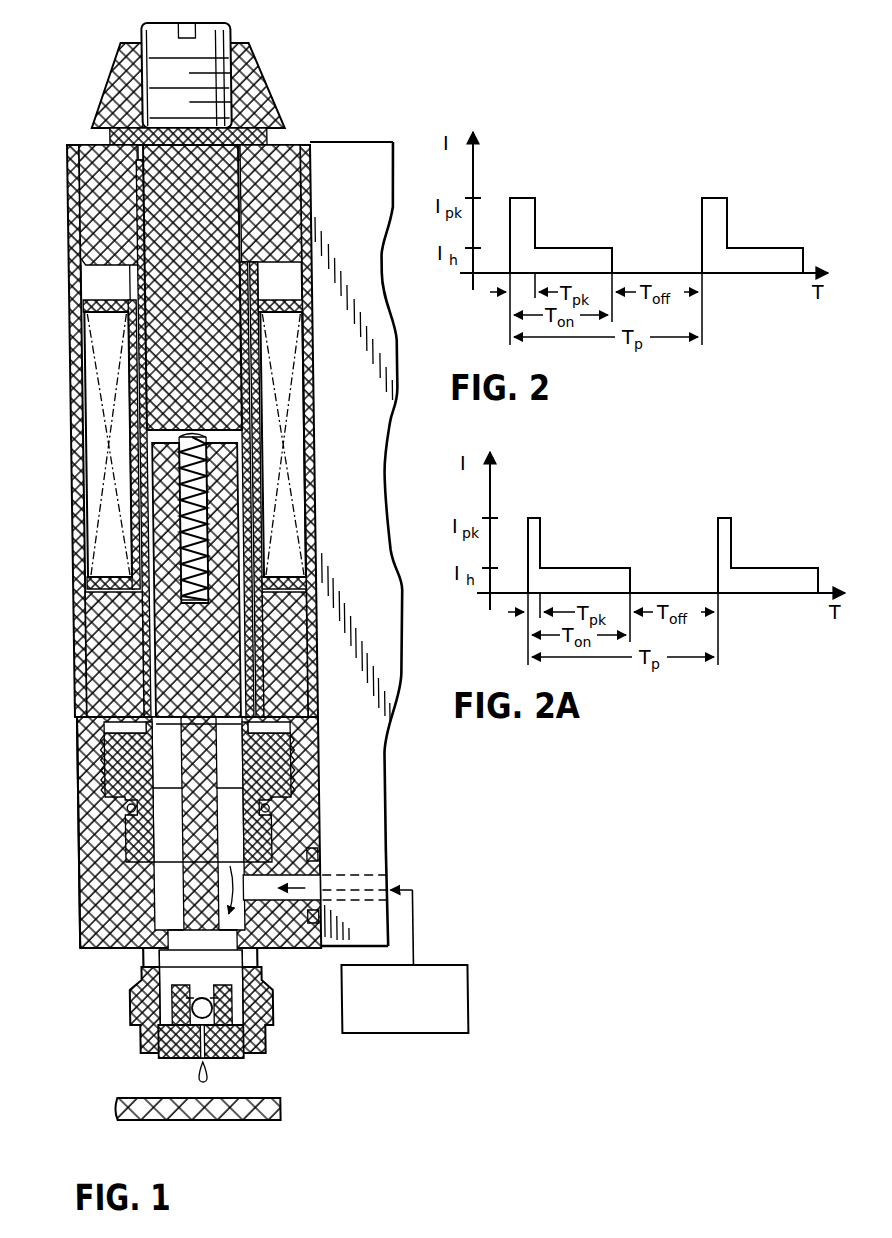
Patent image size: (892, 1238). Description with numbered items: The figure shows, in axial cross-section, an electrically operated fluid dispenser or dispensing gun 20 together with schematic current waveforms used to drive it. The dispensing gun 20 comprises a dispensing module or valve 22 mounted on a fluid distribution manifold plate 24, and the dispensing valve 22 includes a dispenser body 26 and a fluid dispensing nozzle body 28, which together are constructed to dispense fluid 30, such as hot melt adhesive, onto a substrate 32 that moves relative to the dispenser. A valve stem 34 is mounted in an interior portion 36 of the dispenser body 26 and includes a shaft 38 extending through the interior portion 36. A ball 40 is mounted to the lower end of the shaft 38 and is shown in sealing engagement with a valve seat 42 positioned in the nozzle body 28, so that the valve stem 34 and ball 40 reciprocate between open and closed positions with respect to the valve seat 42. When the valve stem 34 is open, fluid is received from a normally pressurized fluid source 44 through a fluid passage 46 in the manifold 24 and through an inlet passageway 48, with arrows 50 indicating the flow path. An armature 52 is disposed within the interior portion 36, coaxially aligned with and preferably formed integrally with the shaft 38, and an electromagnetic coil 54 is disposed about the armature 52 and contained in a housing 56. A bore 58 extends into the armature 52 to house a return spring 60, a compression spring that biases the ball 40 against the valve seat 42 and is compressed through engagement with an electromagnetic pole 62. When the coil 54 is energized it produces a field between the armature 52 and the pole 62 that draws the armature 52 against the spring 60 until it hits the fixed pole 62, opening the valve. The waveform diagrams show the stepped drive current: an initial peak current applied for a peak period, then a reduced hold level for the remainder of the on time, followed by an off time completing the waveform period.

The dispensing gun 20 is at (328, 93).
The dispensing valve 22 is at (66, 978).
The fluid distribution manifold plate 24 is at (380, 772).
The dispenser body 26 is at (311, 188).
The fluid dispensing nozzle body 28 is at (262, 1003).
The fluid 30 is at (200, 1070).
The substrate 32 is at (228, 1112).
The valve stem 34 is at (70, 940).
The interior portion 36 is at (238, 915).
The shaft 38 is at (208, 772).
The ball 40 is at (172, 1007).
The valve seat 42 is at (236, 1030).
The fluid source 44 is at (393, 1033).
The fluid passage 46 is at (380, 884).
The inlet passageway 48 is at (312, 877).
The arrows 50 is at (403, 937).
The armature 52 is at (198, 714).
The electromagnetic coil 54 is at (292, 383).
The housing 56 is at (79, 300).
The bore 58 is at (195, 477).
The return spring 60 is at (186, 435).
The electromagnetic pole 62 is at (192, 287).